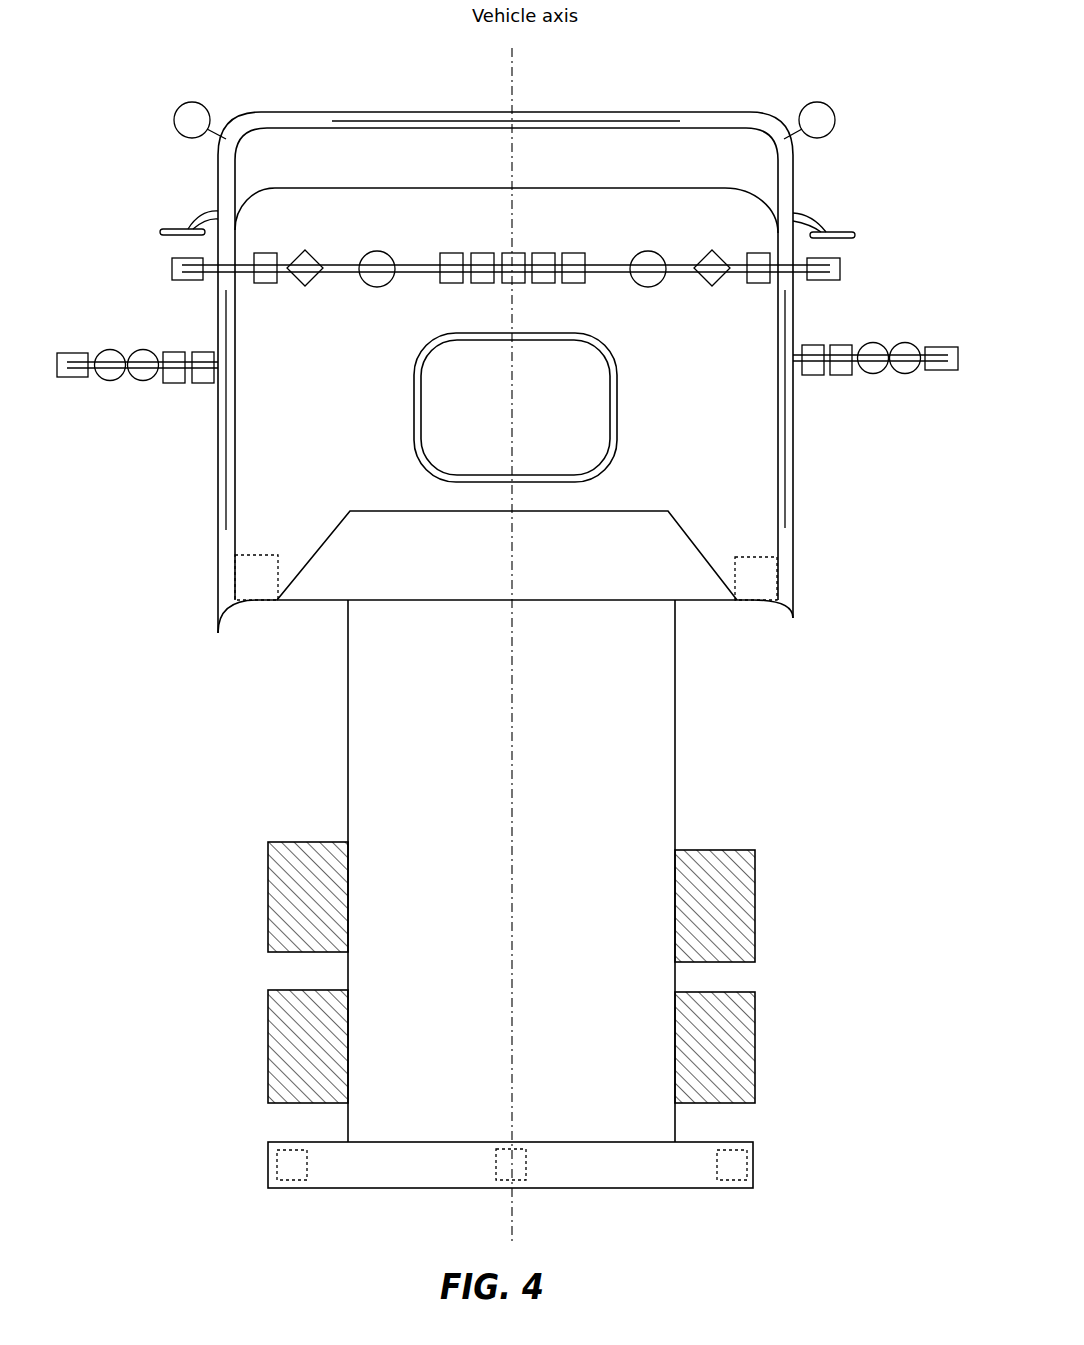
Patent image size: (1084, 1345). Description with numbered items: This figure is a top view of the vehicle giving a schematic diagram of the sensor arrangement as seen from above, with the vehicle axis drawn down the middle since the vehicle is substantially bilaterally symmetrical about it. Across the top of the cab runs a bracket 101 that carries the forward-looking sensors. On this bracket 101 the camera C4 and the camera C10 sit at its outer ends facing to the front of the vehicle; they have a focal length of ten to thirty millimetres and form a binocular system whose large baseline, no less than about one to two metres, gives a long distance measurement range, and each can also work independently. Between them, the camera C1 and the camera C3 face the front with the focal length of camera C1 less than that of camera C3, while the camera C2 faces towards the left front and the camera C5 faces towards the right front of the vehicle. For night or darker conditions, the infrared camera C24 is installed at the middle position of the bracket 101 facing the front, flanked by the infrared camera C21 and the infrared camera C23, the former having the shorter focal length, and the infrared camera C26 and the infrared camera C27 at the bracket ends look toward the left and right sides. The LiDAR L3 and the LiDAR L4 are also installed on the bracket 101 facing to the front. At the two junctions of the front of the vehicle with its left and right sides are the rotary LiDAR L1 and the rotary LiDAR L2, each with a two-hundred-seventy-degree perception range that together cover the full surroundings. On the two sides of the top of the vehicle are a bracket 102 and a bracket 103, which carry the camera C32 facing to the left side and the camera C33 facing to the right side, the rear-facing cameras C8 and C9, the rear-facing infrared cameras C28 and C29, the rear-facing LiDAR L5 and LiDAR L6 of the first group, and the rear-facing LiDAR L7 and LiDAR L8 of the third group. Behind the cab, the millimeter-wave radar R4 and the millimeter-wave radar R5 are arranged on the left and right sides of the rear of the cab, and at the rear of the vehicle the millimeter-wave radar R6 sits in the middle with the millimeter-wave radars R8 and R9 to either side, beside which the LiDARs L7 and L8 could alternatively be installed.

The 360-degree rotary LiDAR L1 is at (192, 118).
The 360-degree rotary LiDAR L2 is at (816, 118).
The LiDAR L3 is at (377, 251).
The LiDAR L4 is at (646, 251).
The LiDAR L5 is at (141, 349).
The LiDAR L6 is at (873, 343).
The LiDAR L7 is at (111, 379).
The LiDAR L8 is at (902, 373).
The camera C1 is at (482, 253).
The camera C2 is at (304, 252).
The camera C3 is at (543, 253).
The camera C4 is at (265, 253).
The camera C5 is at (712, 252).
The camera C8 is at (201, 352).
The camera C9 is at (811, 345).
The camera C10 is at (758, 253).
The infrared camera C21 is at (450, 253).
The infrared camera C23 is at (573, 253).
The infrared camera C24 is at (511, 253).
The infrared camera C26 is at (172, 268).
The infrared camera C27 is at (842, 268).
The infrared camera C28 is at (173, 352).
The infrared camera C29 is at (840, 345).
The camera C32 is at (61, 352).
The camera C33 is at (932, 347).
The millimeter-wave radar R4 is at (244, 584).
The millimeter-wave radar R5 is at (766, 583).
The millimeter-wave radar R6 is at (515, 1150).
The millimeter-wave radar R8 is at (278, 1163).
The millimeter-wave radar R9 is at (745, 1163).
The bracket 101 is at (616, 278).
The bracket 102 is at (922, 364).
The bracket 103 is at (94, 371).